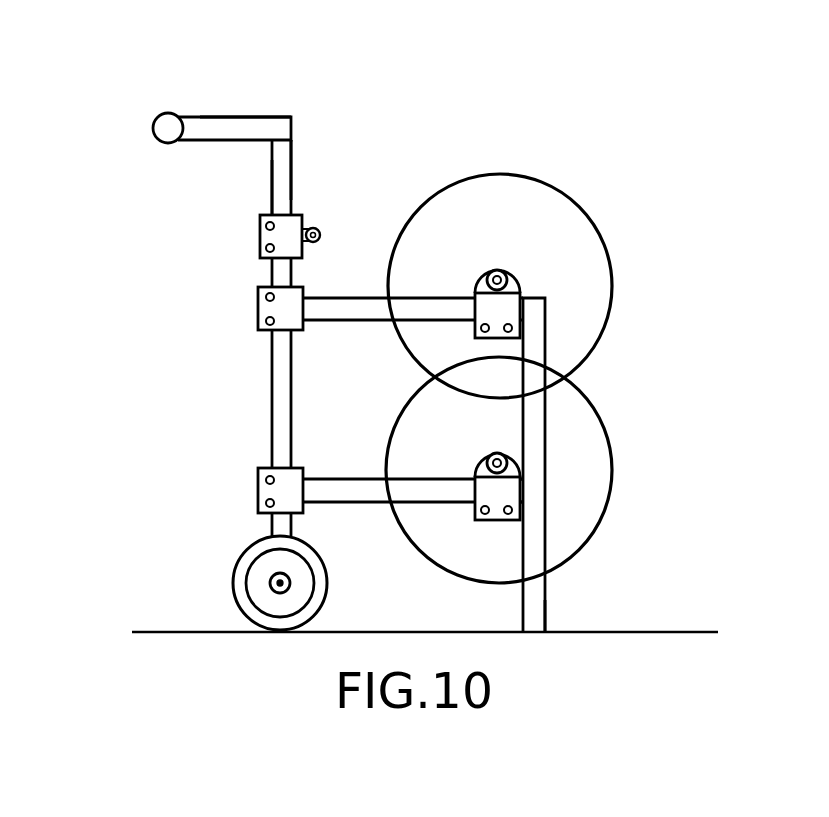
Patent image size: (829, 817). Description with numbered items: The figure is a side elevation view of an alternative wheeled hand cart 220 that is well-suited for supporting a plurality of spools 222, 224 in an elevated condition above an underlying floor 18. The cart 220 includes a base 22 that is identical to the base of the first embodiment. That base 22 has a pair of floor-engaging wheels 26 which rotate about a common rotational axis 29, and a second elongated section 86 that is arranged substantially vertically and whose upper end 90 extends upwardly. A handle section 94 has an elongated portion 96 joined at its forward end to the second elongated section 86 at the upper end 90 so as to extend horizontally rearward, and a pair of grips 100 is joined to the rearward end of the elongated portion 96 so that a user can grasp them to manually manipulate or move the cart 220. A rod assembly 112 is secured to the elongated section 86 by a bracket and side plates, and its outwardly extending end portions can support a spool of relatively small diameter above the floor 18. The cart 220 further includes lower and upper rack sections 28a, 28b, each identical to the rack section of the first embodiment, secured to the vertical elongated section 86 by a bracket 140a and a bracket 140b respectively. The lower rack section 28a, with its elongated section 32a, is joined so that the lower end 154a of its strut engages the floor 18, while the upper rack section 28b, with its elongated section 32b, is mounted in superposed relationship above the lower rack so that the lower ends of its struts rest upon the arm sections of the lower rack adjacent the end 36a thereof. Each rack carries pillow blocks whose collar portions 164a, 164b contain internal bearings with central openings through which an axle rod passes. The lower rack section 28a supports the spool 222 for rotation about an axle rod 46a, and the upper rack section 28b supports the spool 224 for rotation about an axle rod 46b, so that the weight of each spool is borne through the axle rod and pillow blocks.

The floor 18 is at (699, 628).
The base 22 is at (272, 396).
The floor-engaging wheel 26 is at (233, 597).
The lower rack section 28a is at (538, 552).
The upper rack section 28b is at (545, 356).
The rotational axis 29 is at (273, 580).
The elongated section 32a is at (372, 503).
The elongated section 32b is at (385, 321).
The end 36a is at (545, 492).
The axle rod 46a is at (475, 478).
The axle rod 46b is at (508, 282).
The second elongated section 86 is at (272, 185).
The upper end 90 is at (293, 155).
The handle section 94 is at (197, 117).
The elongated portion 96 is at (245, 117).
The grip 100 is at (156, 118).
The rod assembly 112 is at (318, 228).
The bracket 140a is at (258, 492).
The bracket 140b is at (258, 297).
The lower end 154a is at (547, 608).
The collar portion 164a is at (487, 458).
The collar portion 164b is at (503, 272).
The cart 220 is at (143, 195).
The spool 222 is at (608, 428).
The spool 224 is at (559, 192).